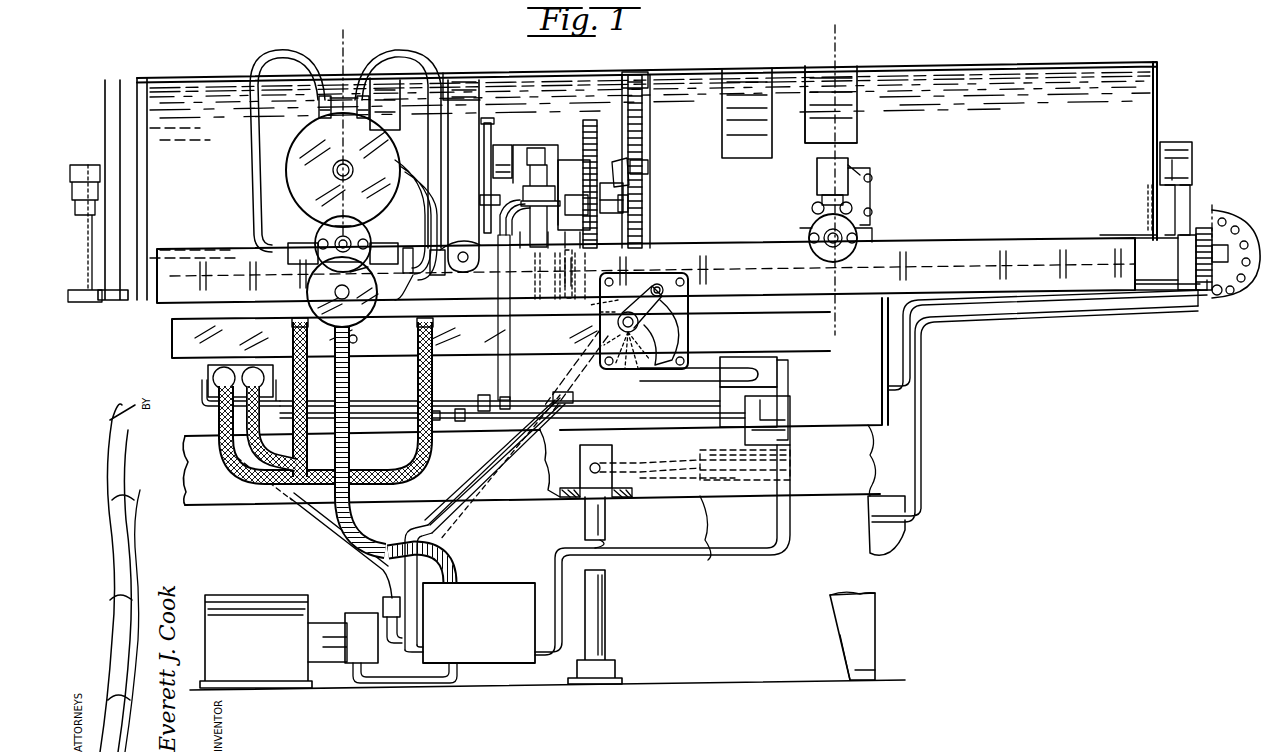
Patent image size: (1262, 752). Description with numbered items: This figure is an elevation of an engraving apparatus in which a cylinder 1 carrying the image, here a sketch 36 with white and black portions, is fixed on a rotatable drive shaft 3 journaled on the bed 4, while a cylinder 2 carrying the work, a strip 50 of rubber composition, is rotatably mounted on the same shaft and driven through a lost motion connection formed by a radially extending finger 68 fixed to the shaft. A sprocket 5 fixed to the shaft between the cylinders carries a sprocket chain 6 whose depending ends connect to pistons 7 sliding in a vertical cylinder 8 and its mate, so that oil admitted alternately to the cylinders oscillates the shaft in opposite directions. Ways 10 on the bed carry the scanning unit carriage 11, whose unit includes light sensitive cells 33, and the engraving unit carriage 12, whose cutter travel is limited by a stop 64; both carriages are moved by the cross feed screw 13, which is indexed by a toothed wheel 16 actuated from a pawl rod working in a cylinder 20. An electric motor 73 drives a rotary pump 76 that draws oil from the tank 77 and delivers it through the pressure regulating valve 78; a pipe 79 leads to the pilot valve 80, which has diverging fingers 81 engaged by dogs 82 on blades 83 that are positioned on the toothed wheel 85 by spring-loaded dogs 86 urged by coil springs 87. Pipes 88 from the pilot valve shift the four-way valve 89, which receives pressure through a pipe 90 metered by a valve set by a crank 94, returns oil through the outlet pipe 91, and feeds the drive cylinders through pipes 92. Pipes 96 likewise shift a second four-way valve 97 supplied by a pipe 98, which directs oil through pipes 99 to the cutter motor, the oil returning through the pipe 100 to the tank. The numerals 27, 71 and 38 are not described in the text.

The cylinder carrying the image 1 is at (1073, 75).
The cylinder carrying the work 2 is at (336, 43).
The drive shaft 3 is at (845, 36).
The bed 4 is at (185, 335).
The sprocket 5 is at (592, 125).
The sprocket chain 6 is at (600, 240).
The pistons 7 is at (580, 463).
The vertically extending cylinder 8 is at (608, 616).
The ways 10 is at (1055, 292).
The scanning unit carriage 11 is at (878, 240).
The engraving unit carriage 12 is at (300, 240).
The cross feed screw 13 is at (932, 262).
The toothed wheel 16 is at (1202, 272).
The cylinder 20 is at (342, 300).
The flange plate 27 is at (1219, 247).
The light sensitive cells 33 is at (503, 158).
The sketch 36 is at (856, 130).
The bracket 38 is at (850, 165).
The strip of rubber composition 50 is at (347, 90).
The stop 64 is at (352, 168).
The radially extending finger 68 is at (492, 150).
The block 71 is at (574, 195).
The electric motor 73 is at (302, 602).
The rotary pump 76 is at (352, 660).
The tank 77 is at (479, 623).
The pressure regulating valve 78 is at (385, 602).
The pipe 79 is at (556, 334).
The pilot valve 80 is at (568, 274).
The diverging finger 81 is at (595, 195).
The dog 82 is at (612, 178).
The blade 83 is at (642, 182).
The toothed wheel 85 is at (642, 130).
The dog 86 is at (650, 90).
The coil spring 87 is at (641, 75).
The pipe 88 is at (702, 430).
The four-way valve 89 is at (760, 357).
The pipe 90 is at (706, 368).
The outlet pipe 91 is at (745, 555).
The pipe 92 is at (785, 455).
The crank 94 is at (642, 300).
The pipe 96 is at (455, 401).
The four-way valve 97 is at (207, 384).
The pipe 98 is at (316, 530).
The pipe 99 is at (399, 162).
The pipe 100 is at (385, 545).